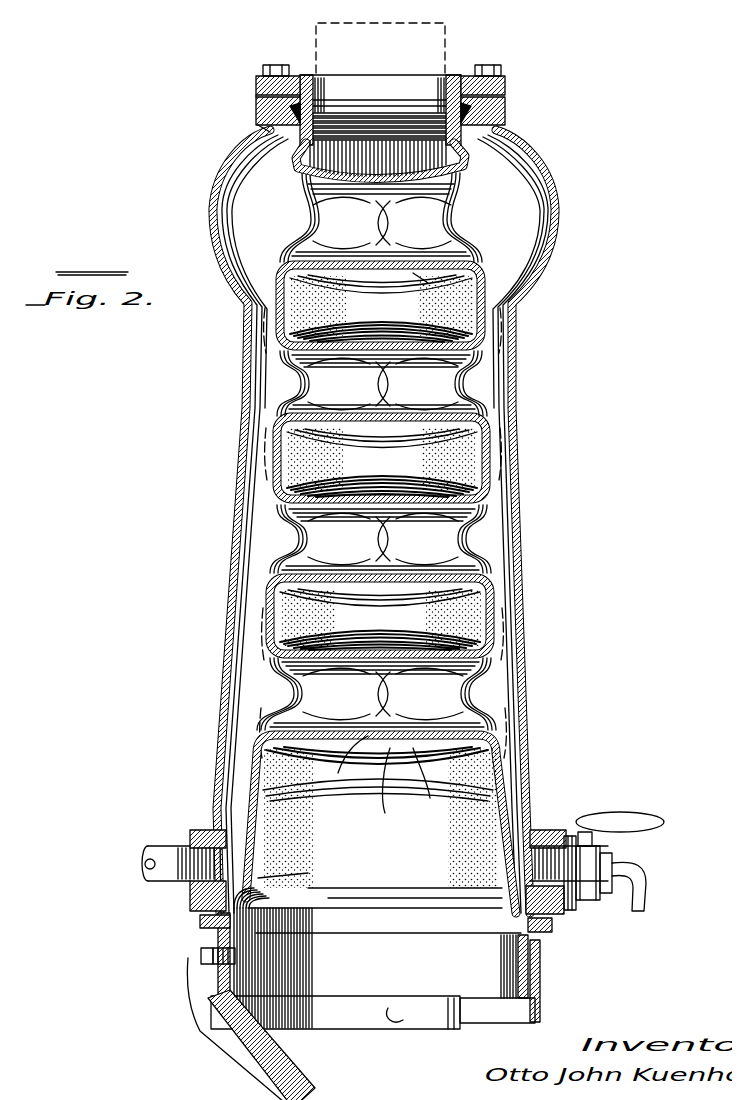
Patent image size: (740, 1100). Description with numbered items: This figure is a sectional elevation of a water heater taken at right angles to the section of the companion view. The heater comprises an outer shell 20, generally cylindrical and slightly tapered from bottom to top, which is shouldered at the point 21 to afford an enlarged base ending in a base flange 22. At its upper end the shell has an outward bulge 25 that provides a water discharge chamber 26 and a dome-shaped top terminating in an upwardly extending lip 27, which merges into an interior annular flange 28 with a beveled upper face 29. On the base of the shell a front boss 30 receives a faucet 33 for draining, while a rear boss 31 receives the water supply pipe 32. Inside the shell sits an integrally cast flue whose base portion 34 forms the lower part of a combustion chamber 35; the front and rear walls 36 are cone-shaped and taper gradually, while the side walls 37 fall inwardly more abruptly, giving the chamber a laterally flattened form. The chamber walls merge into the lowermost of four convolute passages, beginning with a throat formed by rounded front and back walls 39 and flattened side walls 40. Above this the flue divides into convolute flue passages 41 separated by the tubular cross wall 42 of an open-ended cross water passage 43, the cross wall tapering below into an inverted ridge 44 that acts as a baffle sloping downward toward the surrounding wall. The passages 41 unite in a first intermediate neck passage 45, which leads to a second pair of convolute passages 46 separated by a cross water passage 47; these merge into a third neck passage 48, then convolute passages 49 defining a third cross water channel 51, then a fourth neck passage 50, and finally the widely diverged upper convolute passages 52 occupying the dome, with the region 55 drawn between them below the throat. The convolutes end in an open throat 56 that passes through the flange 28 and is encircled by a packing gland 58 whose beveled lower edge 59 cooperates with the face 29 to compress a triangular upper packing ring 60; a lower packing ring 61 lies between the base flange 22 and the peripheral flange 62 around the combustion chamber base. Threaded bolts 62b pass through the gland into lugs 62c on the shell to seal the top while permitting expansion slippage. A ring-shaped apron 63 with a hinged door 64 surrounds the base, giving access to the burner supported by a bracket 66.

The outer shell 20 is at (226, 531).
The shoulder point 21 is at (210, 798).
The base flange 22 is at (578, 916).
The outward bulge 25 is at (203, 201).
The water discharge chamber 26 is at (242, 176).
The upwardly extending flange or lip 27 is at (250, 84).
The interior annular flange 28 is at (248, 118).
The beveled upper face 29 is at (247, 108).
The front boss 30 is at (556, 825).
The rear boss 31 is at (184, 825).
The water supply pipe 32 is at (168, 860).
The faucet 33 is at (630, 870).
The base portion 34 is at (373, 1012).
The combustion chamber 35 is at (381, 824).
The front and rear walls 36 is at (248, 822).
The side walls 37 is at (480, 772).
The front and back walls of throat 39 is at (495, 752).
The flattened side walls of throat 40 is at (378, 780).
The convolute flue passages 41 is at (423, 783).
The tubular cross wall 42 is at (432, 700).
The cross water passage 43 is at (383, 694).
The inverted ridge or angle 44 is at (344, 761).
The first intermediate neck passage 45 is at (380, 619).
The second pair of convolute passages 46 is at (436, 532).
The second cross water passage 47 is at (430, 592).
The third neck passage 48 is at (382, 462).
The third convolute passages 49 is at (432, 392).
The fourth neck passage 50 is at (381, 308).
The third cross water channel 51 is at (383, 384).
The upper convolute passages 52 is at (425, 216).
The upper flow region 55 is at (382, 223).
The open throat 56 is at (380, 127).
The packing gland 58 is at (470, 66).
The beveled lower edge 59 is at (492, 84).
The upper packing ring 60 is at (320, 100).
The lower packing ring 61 is at (280, 810).
The peripheral flange 62 is at (262, 928).
The threaded bolts 62b is at (268, 60).
The outstanding lugs or bosses 62c is at (248, 98).
The ring shaped apron 63 is at (393, 1020).
The hinged door 64 is at (533, 972).
The bracket 66 is at (250, 1072).